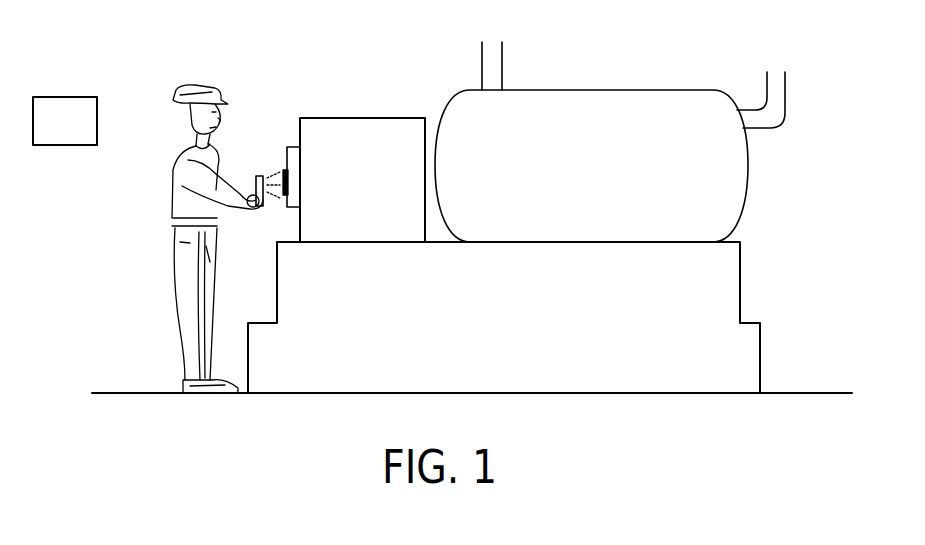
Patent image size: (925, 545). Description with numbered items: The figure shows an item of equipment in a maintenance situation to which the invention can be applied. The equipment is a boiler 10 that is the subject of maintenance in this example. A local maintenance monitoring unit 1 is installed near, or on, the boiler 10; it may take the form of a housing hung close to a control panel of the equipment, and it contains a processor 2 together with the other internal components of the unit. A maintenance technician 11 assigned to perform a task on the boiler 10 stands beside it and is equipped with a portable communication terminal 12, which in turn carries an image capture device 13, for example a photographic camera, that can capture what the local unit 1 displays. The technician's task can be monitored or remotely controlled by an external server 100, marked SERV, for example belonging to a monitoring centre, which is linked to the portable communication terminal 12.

The external server 100 is at (255, 190).
The boiler 10 is at (725, 80).
The maintenance technician 11 is at (172, 82).
The portable communication terminal 12 is at (256, 180).
The image capture device 13 is at (278, 175).
The local maintenance monitoring unit 1 is at (289, 136).
The processor 2 is at (283, 180).